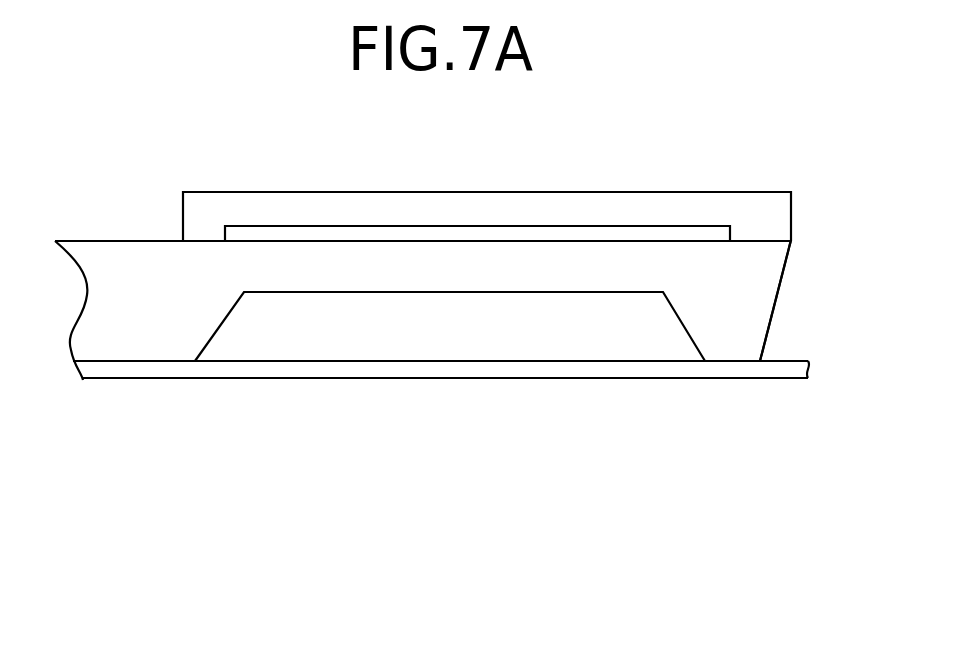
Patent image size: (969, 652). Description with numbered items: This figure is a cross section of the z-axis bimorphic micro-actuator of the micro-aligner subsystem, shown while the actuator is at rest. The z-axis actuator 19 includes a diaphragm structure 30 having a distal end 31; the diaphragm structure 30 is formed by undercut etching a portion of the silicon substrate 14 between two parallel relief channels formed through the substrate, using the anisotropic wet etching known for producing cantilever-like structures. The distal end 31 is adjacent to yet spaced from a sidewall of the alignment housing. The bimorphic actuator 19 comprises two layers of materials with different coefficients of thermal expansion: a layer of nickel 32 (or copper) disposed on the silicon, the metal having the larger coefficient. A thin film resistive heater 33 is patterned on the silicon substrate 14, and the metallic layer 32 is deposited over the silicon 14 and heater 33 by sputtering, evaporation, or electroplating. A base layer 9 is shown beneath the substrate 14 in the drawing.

The z-axis actuator 19 is at (786, 169).
The thin film resistive heater 33 is at (510, 232).
The layer of nickel 32 is at (418, 223).
The diaphragm structure 30 is at (481, 286).
The silicon substrate 14 is at (126, 340).
The distal end 31 is at (750, 328).
The base layer 9 is at (445, 365).